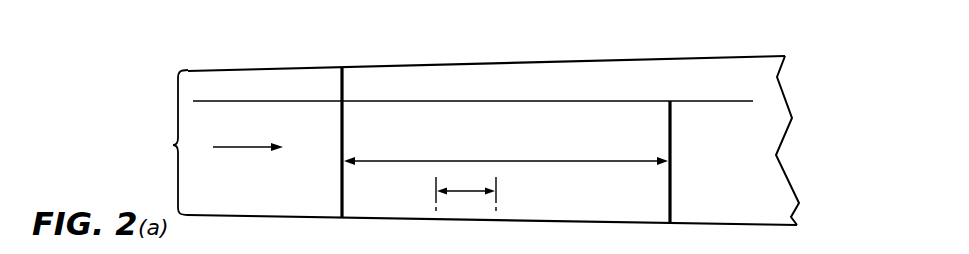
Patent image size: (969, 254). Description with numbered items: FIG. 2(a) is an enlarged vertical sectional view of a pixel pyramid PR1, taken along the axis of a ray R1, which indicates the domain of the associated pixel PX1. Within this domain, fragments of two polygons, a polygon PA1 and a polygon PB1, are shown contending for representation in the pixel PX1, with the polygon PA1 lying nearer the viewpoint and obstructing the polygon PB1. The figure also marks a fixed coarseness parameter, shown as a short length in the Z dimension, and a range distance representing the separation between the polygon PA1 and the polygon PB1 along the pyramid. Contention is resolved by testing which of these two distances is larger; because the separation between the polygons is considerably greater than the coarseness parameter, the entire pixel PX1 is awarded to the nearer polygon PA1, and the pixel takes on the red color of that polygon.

The pixel pyramid PR1 is at (433, 65).
The pixel PX1 is at (146, 142).
The polygon PA1 is at (343, 125).
The polygon PB1 is at (671, 190).
The ray R1 is at (248, 135).